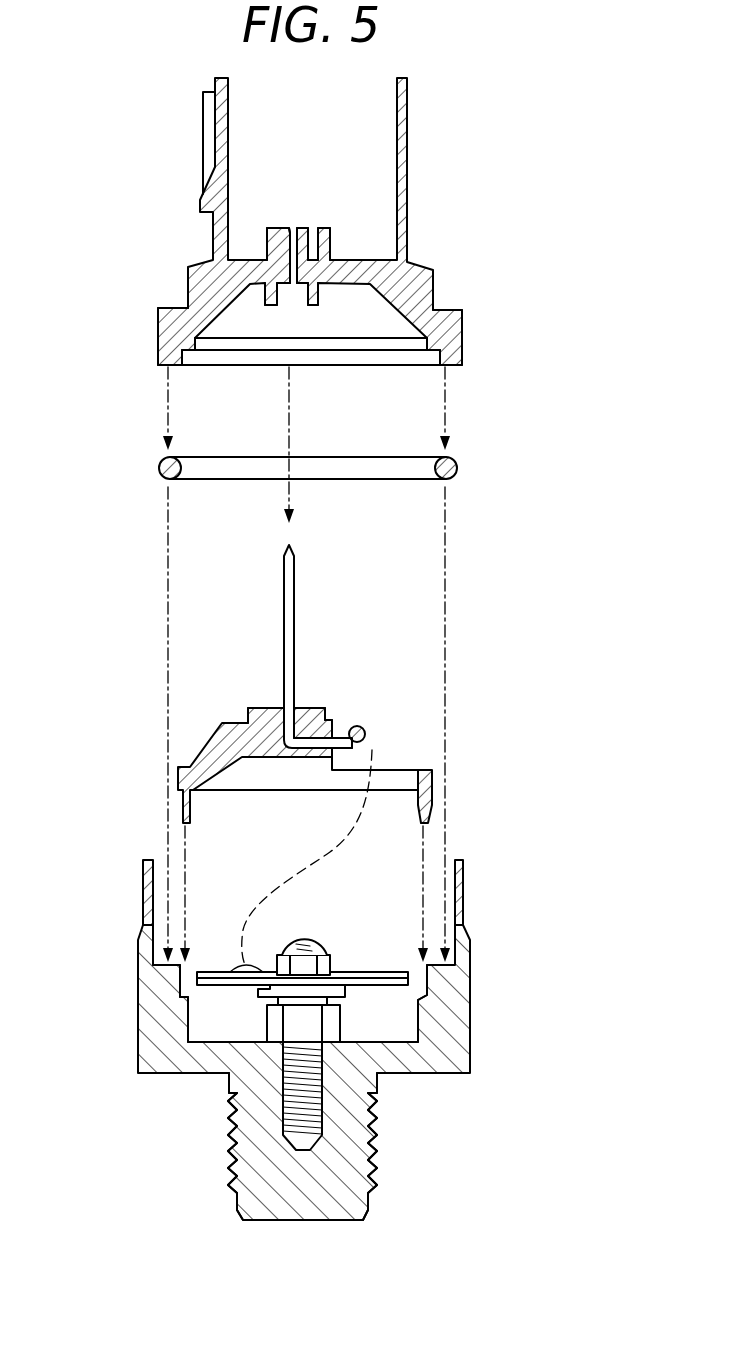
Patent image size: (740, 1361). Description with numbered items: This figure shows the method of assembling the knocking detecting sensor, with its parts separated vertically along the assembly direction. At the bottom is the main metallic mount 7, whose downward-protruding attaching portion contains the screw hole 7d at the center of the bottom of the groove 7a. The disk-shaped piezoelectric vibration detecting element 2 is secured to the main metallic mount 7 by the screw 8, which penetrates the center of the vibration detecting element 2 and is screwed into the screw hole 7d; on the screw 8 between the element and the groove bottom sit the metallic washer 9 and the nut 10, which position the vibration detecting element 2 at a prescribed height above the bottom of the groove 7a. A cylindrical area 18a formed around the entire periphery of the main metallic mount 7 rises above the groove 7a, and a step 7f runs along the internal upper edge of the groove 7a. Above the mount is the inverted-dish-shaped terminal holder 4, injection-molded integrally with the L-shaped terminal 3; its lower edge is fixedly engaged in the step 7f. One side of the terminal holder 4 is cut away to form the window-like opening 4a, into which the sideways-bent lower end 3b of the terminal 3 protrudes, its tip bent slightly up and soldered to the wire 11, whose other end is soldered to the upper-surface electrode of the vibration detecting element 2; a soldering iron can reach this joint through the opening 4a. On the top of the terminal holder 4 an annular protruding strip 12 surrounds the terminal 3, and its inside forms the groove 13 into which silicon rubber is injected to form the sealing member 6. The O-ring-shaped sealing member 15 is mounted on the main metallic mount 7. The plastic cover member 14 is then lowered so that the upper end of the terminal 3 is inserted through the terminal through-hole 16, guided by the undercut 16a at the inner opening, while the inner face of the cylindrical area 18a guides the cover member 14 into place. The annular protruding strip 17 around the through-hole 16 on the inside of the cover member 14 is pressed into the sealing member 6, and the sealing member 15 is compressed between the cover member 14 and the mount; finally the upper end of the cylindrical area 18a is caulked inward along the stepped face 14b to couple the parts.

The vibration detecting element 2 is at (392, 987).
The terminal 3 is at (292, 607).
The lower end of the terminal 3b is at (366, 731).
The terminal holder 4 is at (212, 740).
The window-like opening 4a is at (410, 770).
The sealing member 6 is at (306, 707).
The main metallic mount 7 is at (458, 1043).
The groove 7a is at (350, 1030).
The screw hole 7d is at (282, 1120).
The step 7f is at (187, 977).
The screw 8 is at (327, 960).
The metallic washer 9 is at (260, 990).
The nut 10 is at (276, 1018).
The wire 11 is at (358, 829).
The annular protruding strip 12 is at (328, 712).
The groove 13 is at (266, 707).
The cover member 14 is at (417, 272).
The stepped face 14b is at (450, 302).
The sealing member 15 is at (457, 458).
The terminal through-hole 16 is at (290, 230).
The undercut 16a is at (293, 286).
The annular protruding strip 17 is at (317, 287).
The cylindrical area 18a is at (463, 893).